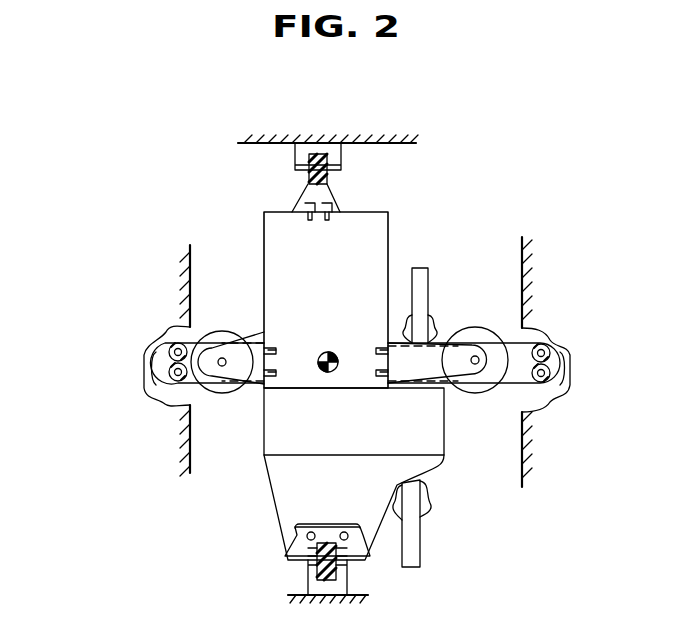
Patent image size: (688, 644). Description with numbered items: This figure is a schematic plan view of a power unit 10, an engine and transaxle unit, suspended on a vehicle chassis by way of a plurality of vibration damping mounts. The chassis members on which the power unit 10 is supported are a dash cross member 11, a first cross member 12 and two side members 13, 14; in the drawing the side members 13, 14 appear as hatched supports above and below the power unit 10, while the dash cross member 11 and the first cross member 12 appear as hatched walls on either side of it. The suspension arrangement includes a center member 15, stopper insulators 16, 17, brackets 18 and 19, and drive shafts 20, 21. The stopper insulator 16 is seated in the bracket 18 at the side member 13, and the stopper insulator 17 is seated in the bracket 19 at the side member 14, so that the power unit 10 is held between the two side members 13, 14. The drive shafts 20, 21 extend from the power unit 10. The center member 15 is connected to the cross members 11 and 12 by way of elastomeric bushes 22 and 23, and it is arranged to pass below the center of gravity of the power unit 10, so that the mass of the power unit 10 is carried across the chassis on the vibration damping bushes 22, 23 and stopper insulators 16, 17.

The power unit 10 is at (236, 220).
The dash cross member 11 is at (522, 472).
The first cross member 12 is at (190, 263).
The side member 13 is at (238, 144).
The side member 14 is at (290, 594).
The center member 15 is at (516, 382).
The stopper insulator 16 is at (309, 173).
The stopper insulator 17 is at (336, 576).
The bracket 18 is at (341, 158).
The bracket 19 is at (308, 574).
The drive shaft 20 is at (420, 268).
The drive shaft 21 is at (420, 548).
The elastomeric bush 22 is at (152, 358).
The elastomeric bush 23 is at (550, 357).